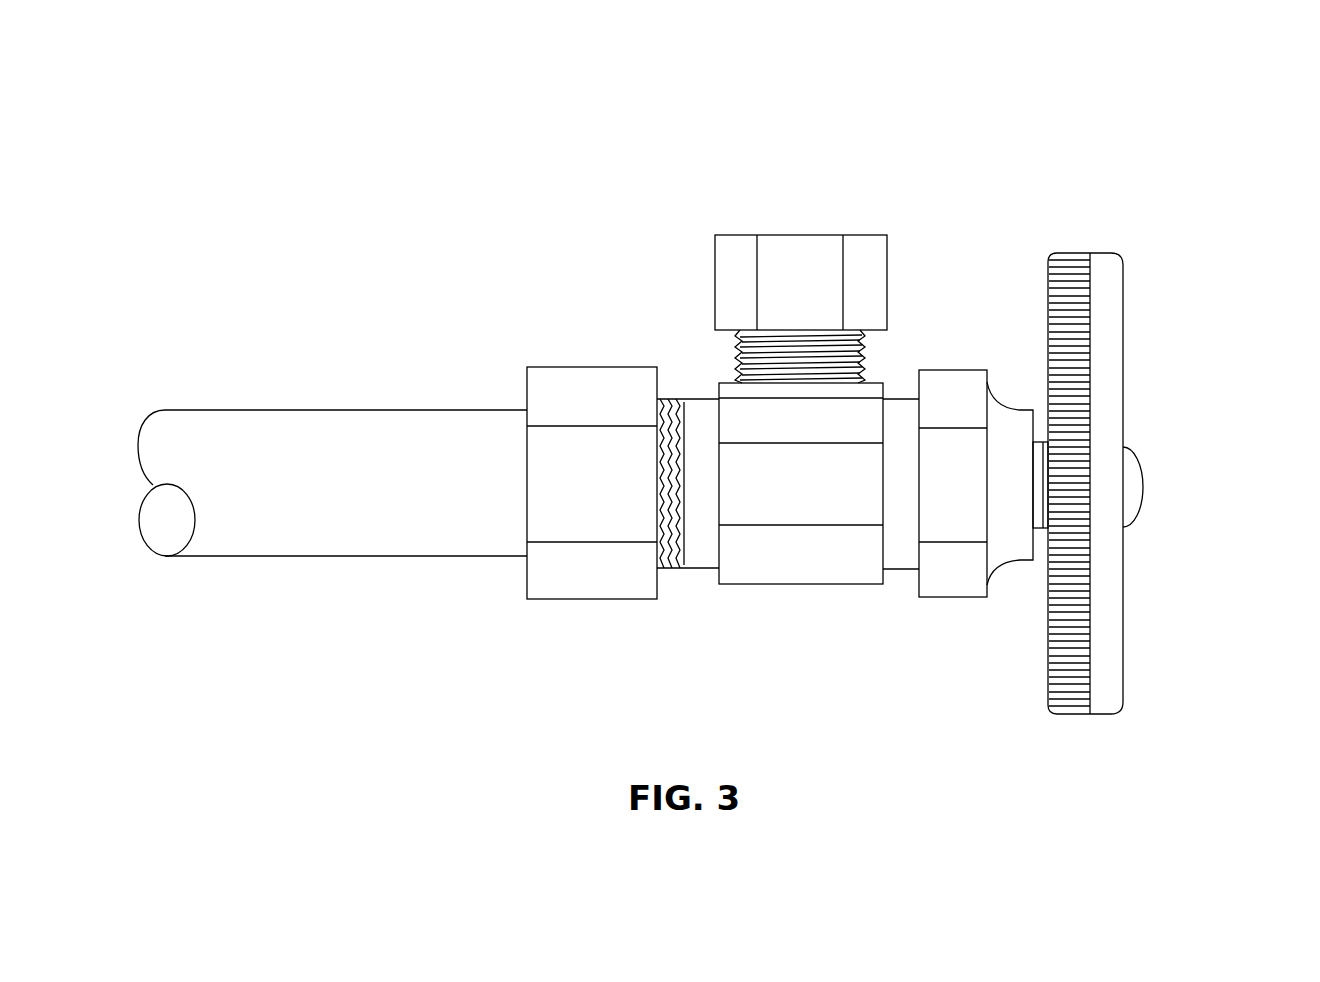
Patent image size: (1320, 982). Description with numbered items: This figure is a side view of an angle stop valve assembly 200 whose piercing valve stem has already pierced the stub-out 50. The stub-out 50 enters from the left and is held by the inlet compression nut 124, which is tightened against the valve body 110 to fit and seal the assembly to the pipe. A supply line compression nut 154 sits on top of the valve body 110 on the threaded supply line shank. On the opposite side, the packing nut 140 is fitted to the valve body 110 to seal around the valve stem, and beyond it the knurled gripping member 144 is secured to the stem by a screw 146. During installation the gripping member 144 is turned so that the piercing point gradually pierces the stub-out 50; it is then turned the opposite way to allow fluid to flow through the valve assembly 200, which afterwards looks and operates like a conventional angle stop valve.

The stub-out 50 is at (350, 414).
The valve body 110 is at (806, 584).
The inlet compression nut 124 is at (582, 368).
The packing nut 140 is at (968, 370).
The gripping member 144 is at (1122, 330).
The screw 146 is at (1137, 470).
The supply line compression nut 154 is at (712, 262).
The valve assembly 200 is at (819, 137).